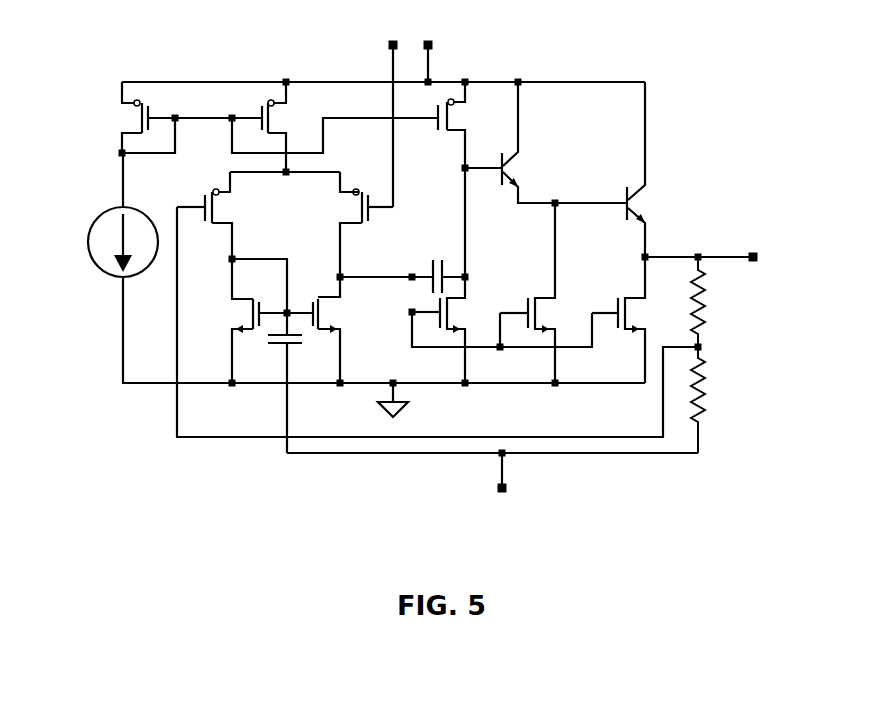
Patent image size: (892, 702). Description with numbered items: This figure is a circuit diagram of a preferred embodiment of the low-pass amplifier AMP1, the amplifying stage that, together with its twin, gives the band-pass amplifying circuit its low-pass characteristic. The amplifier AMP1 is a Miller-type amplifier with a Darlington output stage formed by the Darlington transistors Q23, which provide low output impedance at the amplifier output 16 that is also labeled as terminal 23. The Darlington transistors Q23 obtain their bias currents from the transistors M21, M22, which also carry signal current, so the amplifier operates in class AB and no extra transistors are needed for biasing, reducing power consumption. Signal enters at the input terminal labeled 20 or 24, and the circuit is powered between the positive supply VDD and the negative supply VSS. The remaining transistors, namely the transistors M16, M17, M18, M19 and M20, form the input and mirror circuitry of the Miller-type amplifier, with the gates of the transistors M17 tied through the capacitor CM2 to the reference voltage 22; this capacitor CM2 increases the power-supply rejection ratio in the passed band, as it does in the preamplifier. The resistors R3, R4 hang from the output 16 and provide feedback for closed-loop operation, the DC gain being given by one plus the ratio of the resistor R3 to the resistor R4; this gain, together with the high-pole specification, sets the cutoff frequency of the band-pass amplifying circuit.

The low-pass amplifier AMP1 is at (677, 108).
The input terminal 20 is at (325, 119).
The input terminal 24 is at (370, 44).
The reference voltage 22 is at (480, 485).
The output terminal 23 is at (706, 227).
The output 16 is at (729, 241).
The PMOS transistor M16 is at (285, 224).
The transistors M17 is at (286, 321).
The PMOS transistor M18 is at (204, 127).
The PMOS transistor M19 is at (472, 125).
The NMOS transistor M20 is at (436, 330).
The transistor M21 is at (527, 293).
The transistor M22 is at (616, 320).
The Darlington transistors Q23 is at (573, 169).
The resistor R3 is at (710, 302).
The resistor R4 is at (710, 400).
The capacitor CM2 is at (351, 341).
The positive supply VDD is at (452, 37).
The negative supply / ground VSS is at (425, 409).